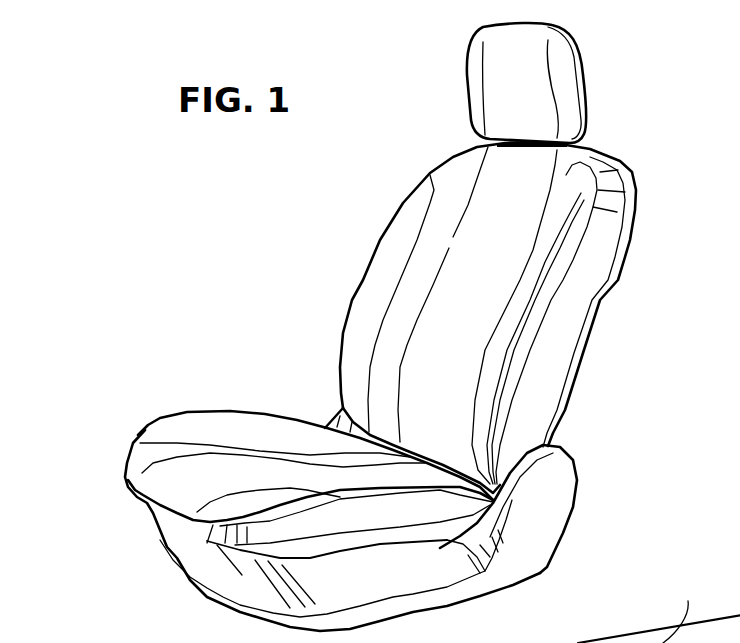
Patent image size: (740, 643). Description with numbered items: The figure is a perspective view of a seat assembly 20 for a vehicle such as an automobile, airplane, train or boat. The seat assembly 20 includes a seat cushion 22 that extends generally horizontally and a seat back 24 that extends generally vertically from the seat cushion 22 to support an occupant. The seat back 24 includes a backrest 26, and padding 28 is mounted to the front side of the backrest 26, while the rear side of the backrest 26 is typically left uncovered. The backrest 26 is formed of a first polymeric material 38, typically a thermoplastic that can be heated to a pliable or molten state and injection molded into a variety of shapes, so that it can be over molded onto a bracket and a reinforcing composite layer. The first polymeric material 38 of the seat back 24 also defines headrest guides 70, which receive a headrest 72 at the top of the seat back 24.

The seat assembly 20 is at (256, 329).
The seat cushion 22 is at (138, 558).
The seat back 24 is at (620, 142).
The backrest 26 is at (617, 273).
The padding 28 is at (387, 253).
The first polymeric material 38 is at (578, 358).
The headrest guides 70 is at (739, 600).
The headrest 72 is at (555, 72).